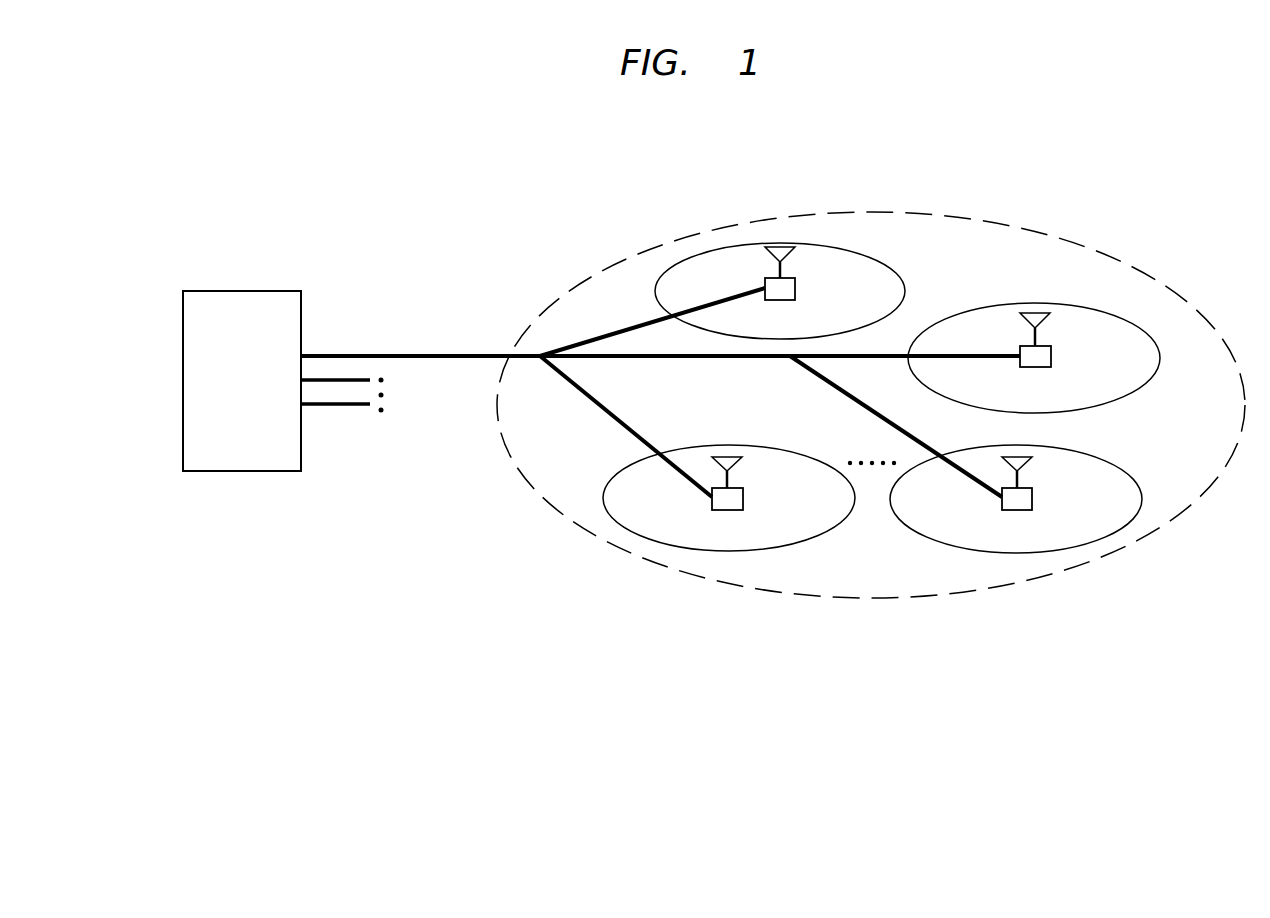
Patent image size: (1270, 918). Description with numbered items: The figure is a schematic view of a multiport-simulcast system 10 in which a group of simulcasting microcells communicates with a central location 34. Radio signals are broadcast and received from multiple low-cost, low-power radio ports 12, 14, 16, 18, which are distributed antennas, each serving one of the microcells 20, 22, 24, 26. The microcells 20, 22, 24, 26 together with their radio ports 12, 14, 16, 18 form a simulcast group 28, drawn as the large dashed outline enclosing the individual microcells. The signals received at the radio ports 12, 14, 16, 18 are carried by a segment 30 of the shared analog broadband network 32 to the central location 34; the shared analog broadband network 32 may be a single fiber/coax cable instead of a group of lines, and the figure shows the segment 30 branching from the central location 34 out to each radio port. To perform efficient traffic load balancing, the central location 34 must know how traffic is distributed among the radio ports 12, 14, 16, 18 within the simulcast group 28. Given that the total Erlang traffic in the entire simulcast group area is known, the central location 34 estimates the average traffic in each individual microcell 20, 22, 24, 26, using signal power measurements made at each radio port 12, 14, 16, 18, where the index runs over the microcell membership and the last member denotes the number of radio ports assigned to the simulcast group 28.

The multiport-simulcast system 10 is at (393, 636).
The radio port 12 is at (783, 300).
The radio port 14 is at (1040, 367).
The radio port 16 is at (1020, 510).
The radio port 18 is at (730, 510).
The microcell 20 is at (892, 268).
The microcell 22 is at (1133, 390).
The microcell 24 is at (1138, 481).
The microcell 26 is at (826, 535).
The simulcast group 28 is at (1172, 266).
The segment of the shared analog broadband network 30 is at (355, 356).
The shared analog broadband network 32 is at (361, 446).
The central location 34 is at (163, 477).